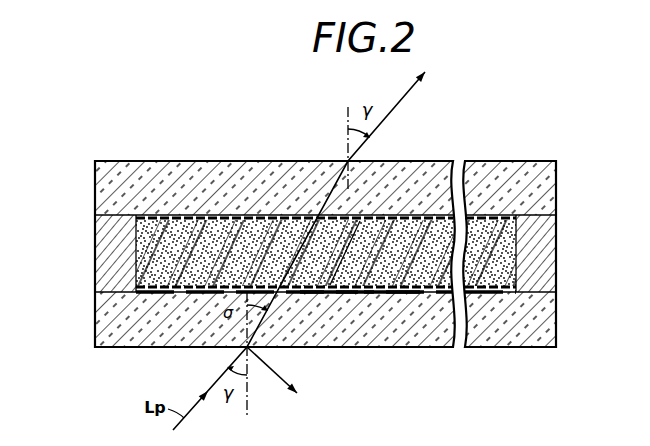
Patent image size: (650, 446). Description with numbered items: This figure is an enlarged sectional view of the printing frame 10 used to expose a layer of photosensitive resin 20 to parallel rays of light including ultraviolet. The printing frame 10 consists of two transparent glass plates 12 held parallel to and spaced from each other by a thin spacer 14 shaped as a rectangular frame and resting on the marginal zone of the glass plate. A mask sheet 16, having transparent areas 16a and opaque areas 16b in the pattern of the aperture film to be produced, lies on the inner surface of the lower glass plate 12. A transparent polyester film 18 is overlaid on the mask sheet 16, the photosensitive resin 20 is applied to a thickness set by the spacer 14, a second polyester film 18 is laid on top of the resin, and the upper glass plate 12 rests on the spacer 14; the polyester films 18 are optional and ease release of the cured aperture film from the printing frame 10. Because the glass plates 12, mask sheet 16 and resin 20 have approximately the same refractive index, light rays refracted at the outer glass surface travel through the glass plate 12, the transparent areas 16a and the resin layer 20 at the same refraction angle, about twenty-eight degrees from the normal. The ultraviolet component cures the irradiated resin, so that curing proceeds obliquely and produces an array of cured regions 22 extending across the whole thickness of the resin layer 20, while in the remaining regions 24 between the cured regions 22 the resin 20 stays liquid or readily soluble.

The printing frame 10 is at (241, 152).
The transparent glass plate 12 is at (167, 176).
The spacer 14 is at (102, 257).
The mask sheet 16 is at (523, 292).
The transparent areas 16a is at (340, 294).
The opaque areas 16b is at (380, 294).
The transparent polyester film 18 is at (135, 226).
The photosensitive resin 20 is at (498, 236).
The cured regions 22 is at (299, 228).
The remaining regions 24 is at (348, 233).